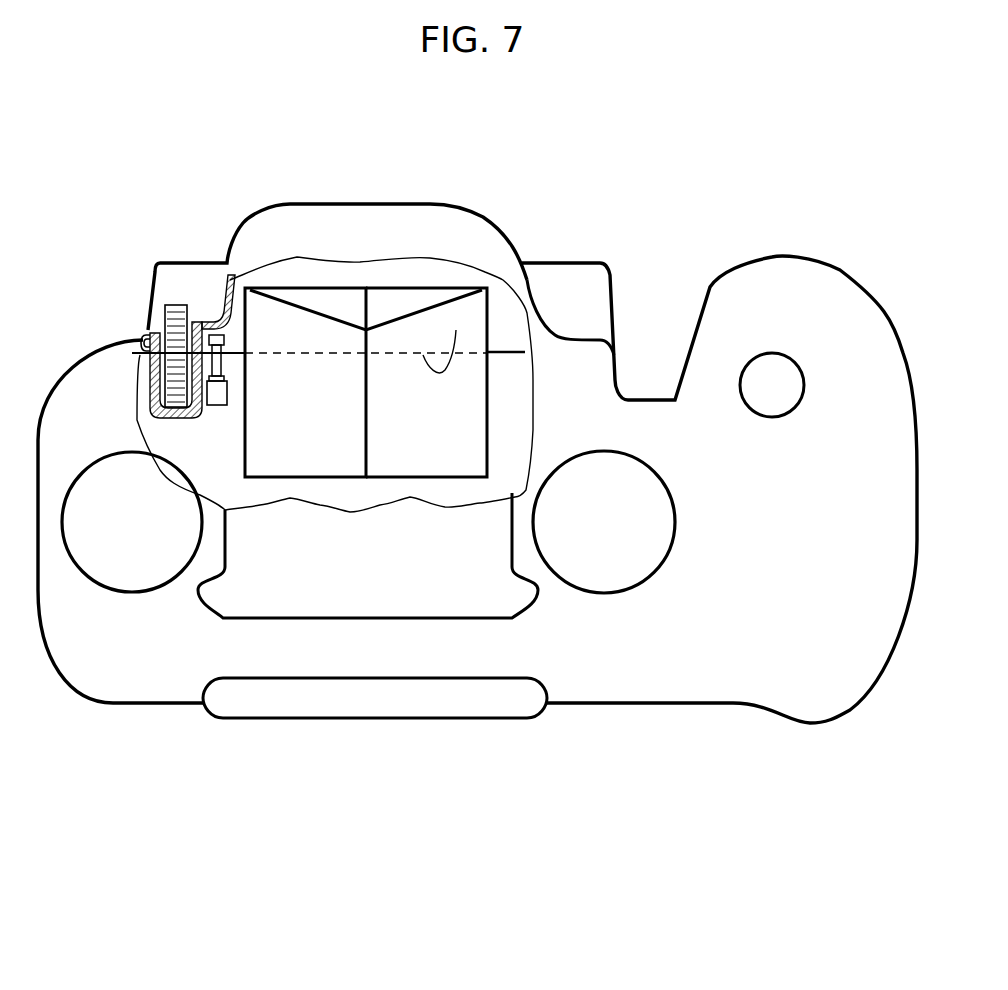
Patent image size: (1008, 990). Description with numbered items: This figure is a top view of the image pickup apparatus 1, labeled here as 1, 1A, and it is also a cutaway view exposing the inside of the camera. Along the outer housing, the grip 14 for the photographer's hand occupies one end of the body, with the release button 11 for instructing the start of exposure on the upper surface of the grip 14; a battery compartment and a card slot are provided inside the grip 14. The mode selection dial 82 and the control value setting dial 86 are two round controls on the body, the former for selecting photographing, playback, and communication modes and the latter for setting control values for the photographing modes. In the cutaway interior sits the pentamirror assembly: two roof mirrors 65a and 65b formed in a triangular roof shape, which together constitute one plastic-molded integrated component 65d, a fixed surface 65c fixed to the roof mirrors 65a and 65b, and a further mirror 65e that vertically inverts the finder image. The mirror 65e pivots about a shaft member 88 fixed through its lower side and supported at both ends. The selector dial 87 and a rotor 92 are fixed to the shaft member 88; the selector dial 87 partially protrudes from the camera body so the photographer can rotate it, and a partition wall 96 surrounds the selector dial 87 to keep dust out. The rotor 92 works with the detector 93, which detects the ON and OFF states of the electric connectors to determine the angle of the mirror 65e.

The image pickup apparatus 1 is at (190, 108).
The camera body 1A is at (477, 448).
The grip 14 is at (840, 270).
The release button 11 is at (765, 375).
The mode selection dial 82 is at (613, 592).
The control value setting dial 86 is at (128, 592).
The roof mirror 65a is at (314, 442).
The roof mirror 65b is at (424, 443).
The fixed surface 65c is at (352, 300).
The integrated component 65d is at (265, 780).
The mirror 65e is at (456, 330).
The selector dial 87 is at (176, 305).
The shaft member 88 is at (505, 343).
The rotor 92 is at (214, 335).
The detector 93 is at (229, 395).
The partition wall 96 is at (150, 367).